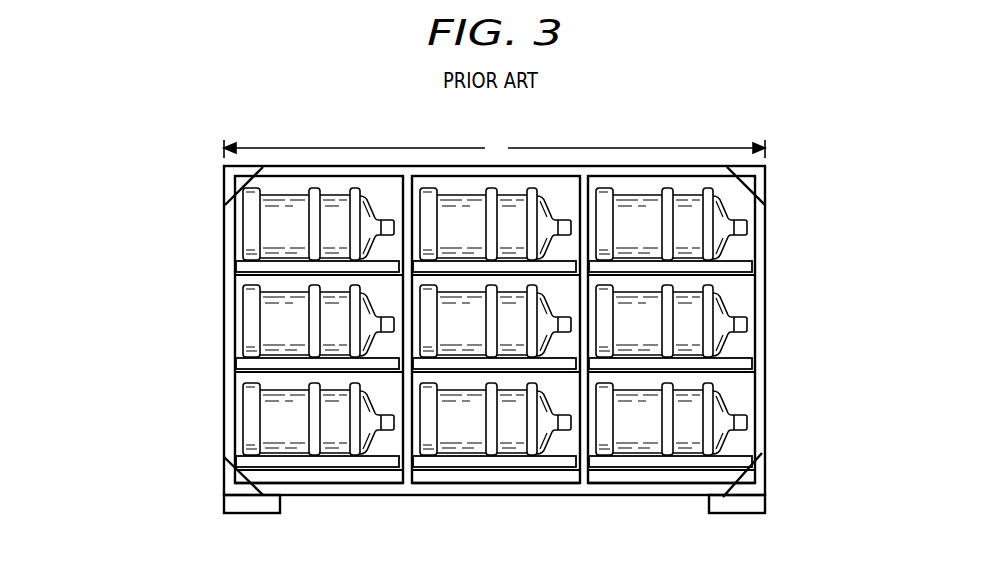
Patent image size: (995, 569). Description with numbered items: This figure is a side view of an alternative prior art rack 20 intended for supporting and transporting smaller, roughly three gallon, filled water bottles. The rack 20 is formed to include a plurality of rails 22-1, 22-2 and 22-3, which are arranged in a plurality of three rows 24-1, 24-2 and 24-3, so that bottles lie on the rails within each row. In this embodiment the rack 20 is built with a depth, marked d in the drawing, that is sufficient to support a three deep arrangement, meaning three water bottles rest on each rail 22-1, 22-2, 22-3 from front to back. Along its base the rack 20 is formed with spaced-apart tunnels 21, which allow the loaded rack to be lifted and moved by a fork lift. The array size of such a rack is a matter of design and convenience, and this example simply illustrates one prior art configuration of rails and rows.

The prior art rack 20 is at (831, 152).
The tunnels 21 is at (617, 477).
The rail 22-1 is at (740, 267).
The rail 22-2 is at (740, 364).
The rail 22-3 is at (740, 462).
The row 24-1 is at (208, 227).
The row 24-2 is at (208, 320).
The row 24-3 is at (208, 417).